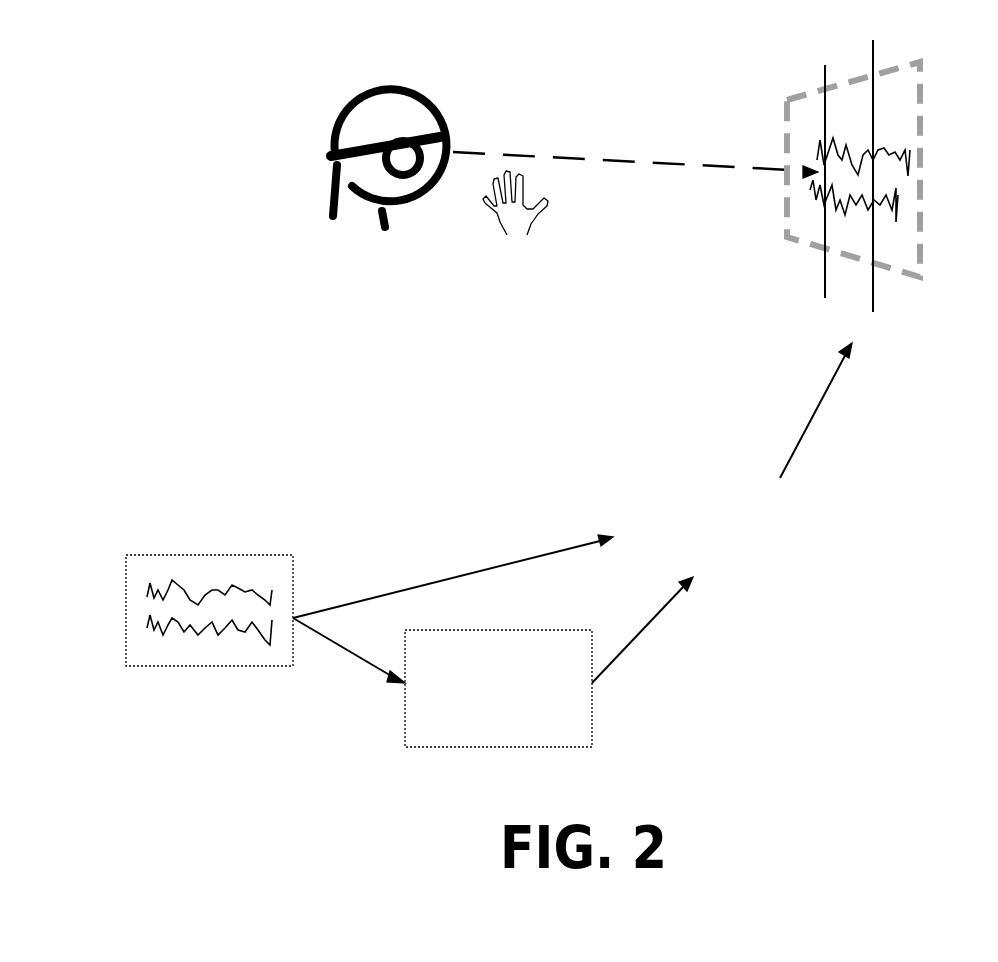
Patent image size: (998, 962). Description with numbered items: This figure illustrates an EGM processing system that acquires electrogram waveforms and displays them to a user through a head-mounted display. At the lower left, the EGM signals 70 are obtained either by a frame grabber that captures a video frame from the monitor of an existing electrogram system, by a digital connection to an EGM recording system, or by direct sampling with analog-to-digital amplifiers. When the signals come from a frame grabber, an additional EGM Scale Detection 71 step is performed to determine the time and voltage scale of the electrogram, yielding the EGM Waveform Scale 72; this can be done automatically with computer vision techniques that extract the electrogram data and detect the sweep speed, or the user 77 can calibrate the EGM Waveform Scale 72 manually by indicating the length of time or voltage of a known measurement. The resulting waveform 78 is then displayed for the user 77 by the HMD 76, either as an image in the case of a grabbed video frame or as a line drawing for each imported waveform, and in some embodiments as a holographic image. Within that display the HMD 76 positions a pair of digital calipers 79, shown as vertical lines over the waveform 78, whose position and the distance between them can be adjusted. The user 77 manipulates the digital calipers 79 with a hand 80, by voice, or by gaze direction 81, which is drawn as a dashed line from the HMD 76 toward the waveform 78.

The EGM signals 70 is at (160, 661).
The EGM Scale Detection 71 is at (438, 739).
The EGM Waveform Scale 72 is at (667, 561).
The HMD 76 is at (402, 148).
The user 77 is at (360, 94).
The waveform 78 is at (963, 184).
The digital calipers 79 is at (819, 277).
The hand 80 is at (526, 257).
The gaze direction 81 is at (677, 154).